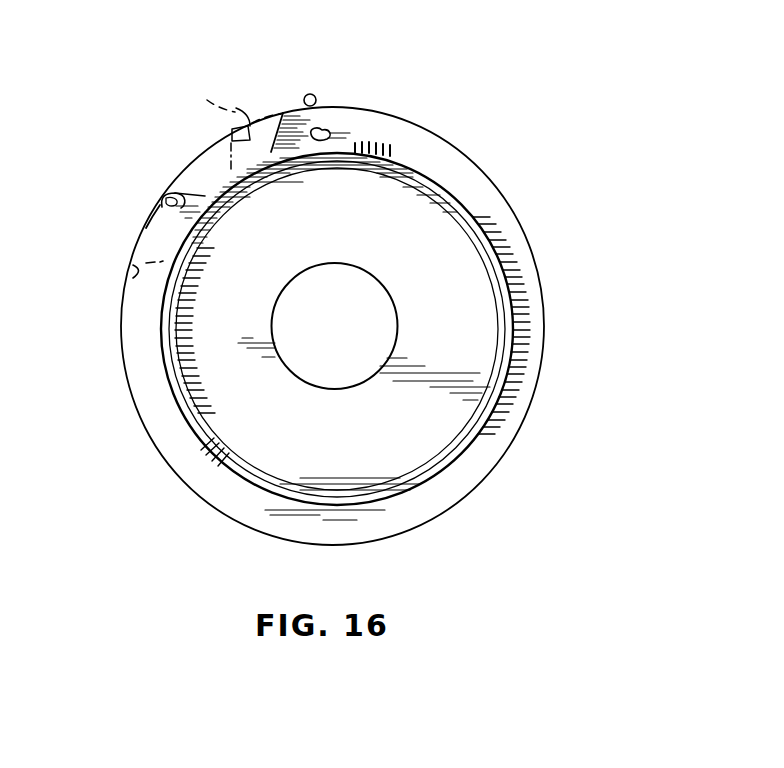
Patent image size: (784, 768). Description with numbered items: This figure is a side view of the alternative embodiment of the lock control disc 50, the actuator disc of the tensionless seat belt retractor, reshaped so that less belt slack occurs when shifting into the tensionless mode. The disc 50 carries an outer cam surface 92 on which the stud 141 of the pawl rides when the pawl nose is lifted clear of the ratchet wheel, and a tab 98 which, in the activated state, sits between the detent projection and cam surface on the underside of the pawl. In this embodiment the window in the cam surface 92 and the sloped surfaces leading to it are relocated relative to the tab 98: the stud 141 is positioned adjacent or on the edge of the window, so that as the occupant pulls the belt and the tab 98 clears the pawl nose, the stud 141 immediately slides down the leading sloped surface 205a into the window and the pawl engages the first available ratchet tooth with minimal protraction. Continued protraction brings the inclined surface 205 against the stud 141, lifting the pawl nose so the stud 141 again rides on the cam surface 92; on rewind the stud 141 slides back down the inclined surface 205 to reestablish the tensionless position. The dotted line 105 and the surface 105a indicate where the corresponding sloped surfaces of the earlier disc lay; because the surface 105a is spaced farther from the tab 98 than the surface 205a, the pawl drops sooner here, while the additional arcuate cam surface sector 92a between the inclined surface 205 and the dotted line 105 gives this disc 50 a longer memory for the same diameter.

The lock control disc 50 is at (336, 442).
The cam surface 92 is at (455, 144).
The arcuate cam surface sector 92a is at (146, 228).
The tab 98 is at (326, 131).
The sloped surface 105 is at (127, 281).
The inclined surface 105a is at (207, 100).
The stud 141 is at (316, 94).
The inclined surface 205 is at (159, 194).
The sloped surface 205a is at (292, 111).